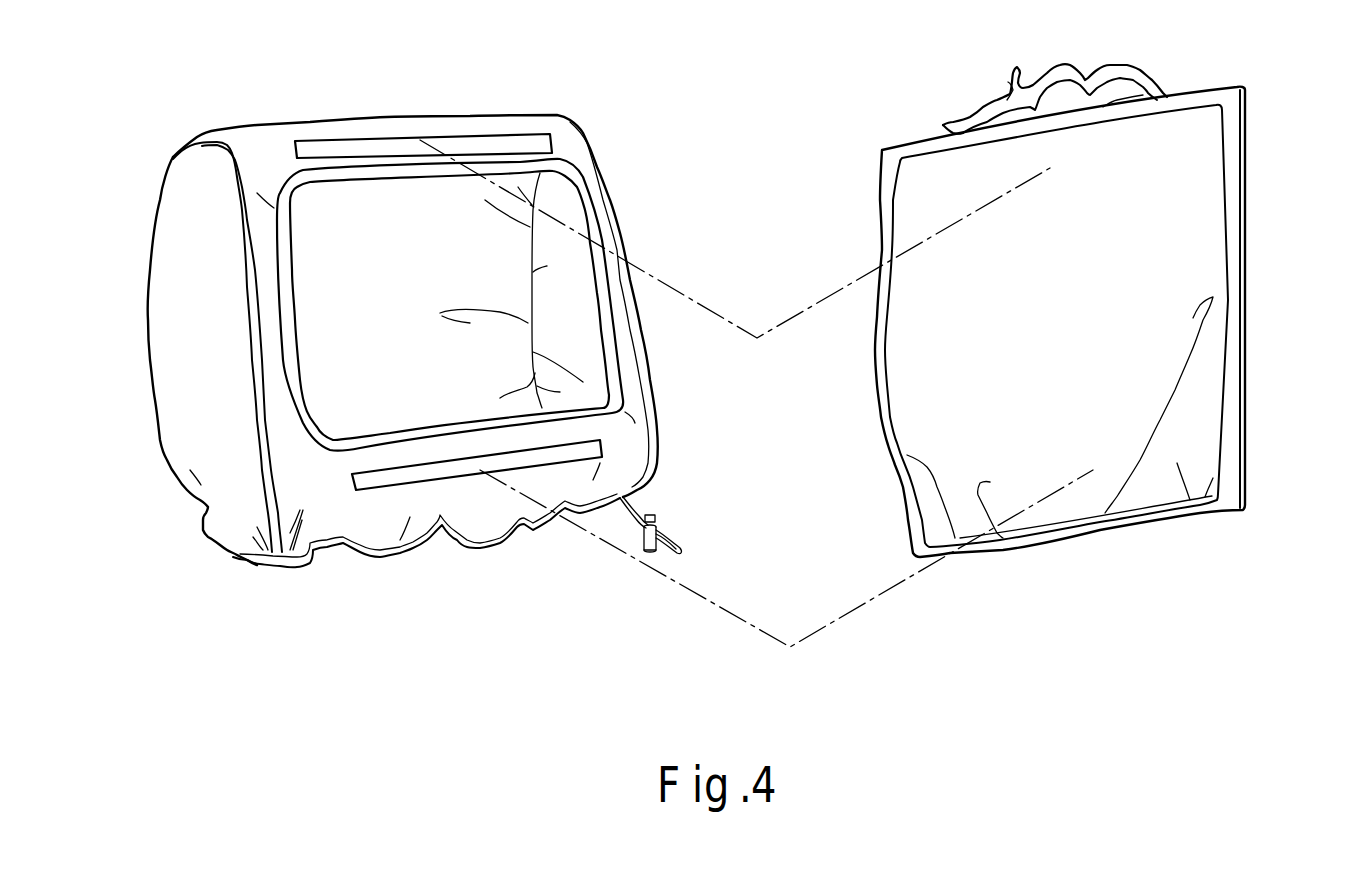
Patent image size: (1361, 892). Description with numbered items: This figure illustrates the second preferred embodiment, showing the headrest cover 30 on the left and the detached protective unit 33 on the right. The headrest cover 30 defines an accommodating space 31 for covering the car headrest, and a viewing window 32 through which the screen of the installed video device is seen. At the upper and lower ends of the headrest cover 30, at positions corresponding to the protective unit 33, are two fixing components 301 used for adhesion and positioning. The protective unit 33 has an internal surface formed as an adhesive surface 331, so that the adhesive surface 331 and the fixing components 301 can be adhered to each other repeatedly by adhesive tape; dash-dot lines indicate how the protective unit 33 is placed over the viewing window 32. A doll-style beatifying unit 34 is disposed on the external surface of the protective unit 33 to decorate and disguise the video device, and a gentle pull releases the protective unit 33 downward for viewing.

The headrest cover 30 is at (172, 336).
The fixing component 301 is at (381, 145).
The accommodating space 31 is at (328, 231).
The viewing window 32 is at (593, 223).
The protective unit 33 is at (1248, 233).
The adhesive surface 331 is at (1183, 188).
The beatifying unit 34 is at (1061, 92).